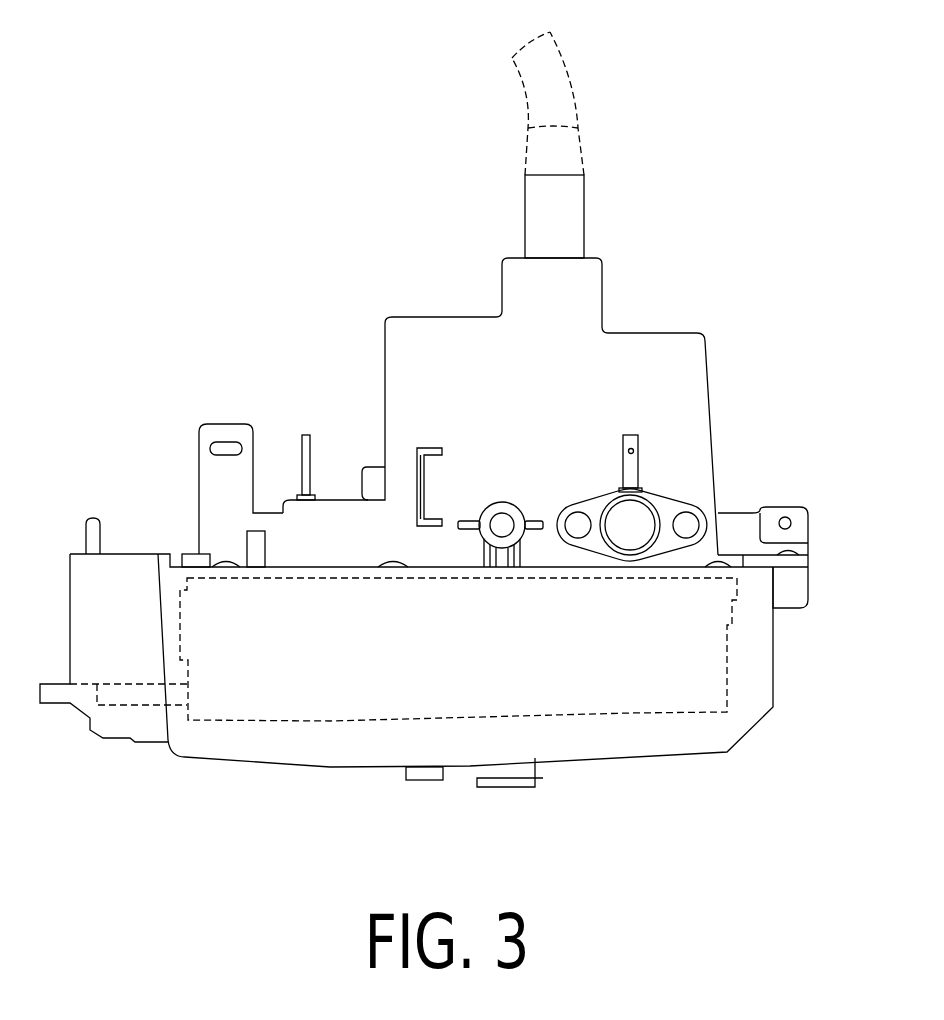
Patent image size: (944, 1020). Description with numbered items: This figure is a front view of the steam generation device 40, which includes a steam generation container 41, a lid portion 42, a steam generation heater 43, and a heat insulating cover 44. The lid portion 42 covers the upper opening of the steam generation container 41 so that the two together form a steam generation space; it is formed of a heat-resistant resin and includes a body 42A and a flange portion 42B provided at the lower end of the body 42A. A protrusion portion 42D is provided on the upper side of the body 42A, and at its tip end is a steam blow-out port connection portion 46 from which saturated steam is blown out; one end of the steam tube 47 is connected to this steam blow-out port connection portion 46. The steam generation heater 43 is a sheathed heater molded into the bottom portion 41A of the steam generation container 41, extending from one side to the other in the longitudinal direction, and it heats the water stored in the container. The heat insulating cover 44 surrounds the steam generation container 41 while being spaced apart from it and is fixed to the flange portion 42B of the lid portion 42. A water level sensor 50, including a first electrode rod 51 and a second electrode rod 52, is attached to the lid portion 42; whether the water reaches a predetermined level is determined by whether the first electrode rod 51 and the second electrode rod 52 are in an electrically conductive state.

The steam generation device 40 is at (216, 346).
The steam generation container 41 is at (735, 655).
The bottom portion 41A is at (350, 717).
The lid portion 42 is at (718, 422).
The body 42A is at (715, 473).
The flange portion 42B is at (740, 522).
The protrusion portion 42D is at (598, 292).
The steam generation heater 43 is at (130, 707).
The heat insulating cover 44 is at (277, 752).
The steam blow-out port connection portion 46 is at (523, 215).
The steam tube 47 is at (573, 70).
The water level sensor 50 is at (527, 420).
The first electrode rod 51 is at (305, 433).
The second electrode rod 52 is at (632, 433).